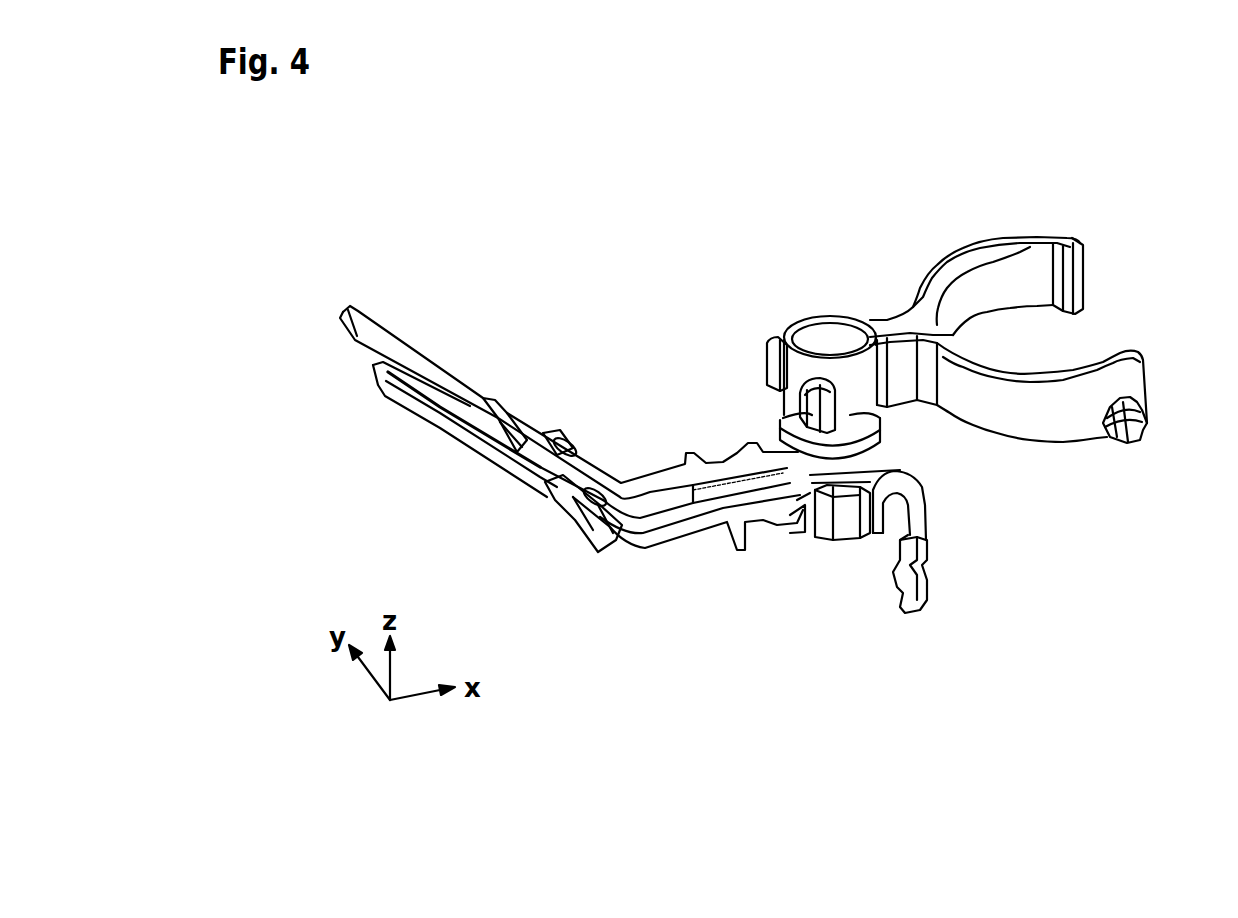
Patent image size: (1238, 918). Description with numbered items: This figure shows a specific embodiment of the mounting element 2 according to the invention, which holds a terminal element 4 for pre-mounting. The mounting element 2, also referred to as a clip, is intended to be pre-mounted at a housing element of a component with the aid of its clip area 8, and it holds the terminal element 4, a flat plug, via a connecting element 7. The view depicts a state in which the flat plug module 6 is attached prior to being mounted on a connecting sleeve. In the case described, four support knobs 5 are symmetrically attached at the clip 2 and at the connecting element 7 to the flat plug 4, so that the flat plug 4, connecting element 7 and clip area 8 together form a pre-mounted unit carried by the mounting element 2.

The mounting element 2 is at (1137, 298).
The terminal element 4 is at (422, 364).
The support knob 5 is at (808, 425).
The flat plug module 6 is at (606, 428).
The connecting element 7 is at (835, 333).
The clip area 8 is at (997, 268).